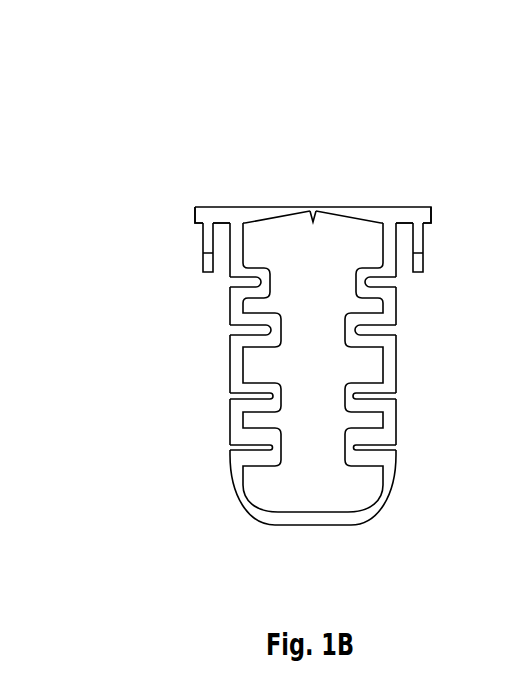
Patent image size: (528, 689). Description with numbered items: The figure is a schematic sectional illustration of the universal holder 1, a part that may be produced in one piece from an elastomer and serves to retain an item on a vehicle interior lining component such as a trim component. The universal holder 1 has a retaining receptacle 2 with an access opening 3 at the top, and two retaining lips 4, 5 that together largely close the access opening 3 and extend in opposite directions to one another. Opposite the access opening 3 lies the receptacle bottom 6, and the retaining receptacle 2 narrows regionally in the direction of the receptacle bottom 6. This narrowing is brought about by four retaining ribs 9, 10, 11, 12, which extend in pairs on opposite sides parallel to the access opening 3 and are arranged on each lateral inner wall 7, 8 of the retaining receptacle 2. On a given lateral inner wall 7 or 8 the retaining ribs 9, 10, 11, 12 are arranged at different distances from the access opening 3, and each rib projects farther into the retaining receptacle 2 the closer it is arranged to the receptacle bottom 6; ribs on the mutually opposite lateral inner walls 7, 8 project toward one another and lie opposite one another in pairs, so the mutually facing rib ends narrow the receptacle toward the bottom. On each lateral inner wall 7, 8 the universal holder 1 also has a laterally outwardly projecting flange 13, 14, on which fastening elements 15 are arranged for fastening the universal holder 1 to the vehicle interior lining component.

The universal holder 1 is at (313, 136).
The retaining receptacle 2 is at (316, 495).
The access opening 3 is at (313, 221).
The retaining lip 4 is at (276, 214).
The retaining lip 5 is at (355, 208).
The receptacle bottom 6 is at (327, 515).
The lateral inner wall 7 is at (240, 362).
The lateral inner wall 8 is at (394, 360).
The retaining rib 9 is at (263, 267).
The retaining rib 10 is at (270, 323).
The retaining rib 11 is at (278, 399).
The retaining rib 12 is at (278, 447).
The flange 13 is at (212, 217).
The flange 14 is at (418, 207).
The fastening element 15 is at (212, 242).